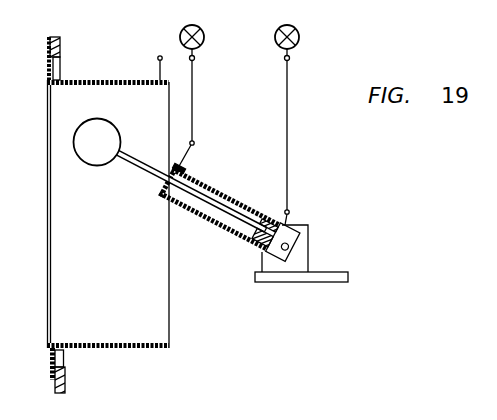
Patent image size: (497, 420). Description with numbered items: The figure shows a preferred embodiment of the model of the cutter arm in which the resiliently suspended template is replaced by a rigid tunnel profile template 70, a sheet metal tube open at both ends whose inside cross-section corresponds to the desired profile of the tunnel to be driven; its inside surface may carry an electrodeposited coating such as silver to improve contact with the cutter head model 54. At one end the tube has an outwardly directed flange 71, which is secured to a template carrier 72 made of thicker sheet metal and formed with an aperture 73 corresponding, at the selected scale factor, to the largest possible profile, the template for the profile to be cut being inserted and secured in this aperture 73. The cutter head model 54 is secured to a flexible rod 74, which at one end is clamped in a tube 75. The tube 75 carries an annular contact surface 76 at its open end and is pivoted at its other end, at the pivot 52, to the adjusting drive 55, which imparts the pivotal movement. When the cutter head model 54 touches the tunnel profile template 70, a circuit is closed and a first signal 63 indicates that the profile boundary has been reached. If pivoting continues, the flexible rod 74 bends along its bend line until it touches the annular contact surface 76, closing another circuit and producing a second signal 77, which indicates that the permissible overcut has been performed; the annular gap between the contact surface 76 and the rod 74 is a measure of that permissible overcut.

The pivot block 52 is at (303, 238).
The cutter head model 54 is at (89, 153).
The adjusting drive 55 is at (302, 263).
The first signal 63 is at (299, 37).
The tunnel profile template 70 is at (142, 65).
The outwardly directed flange 71 is at (47, 62).
The template carrier 72 is at (58, 42).
The aperture 73 is at (56, 72).
The flexible rod 74 is at (138, 162).
The tube 75 is at (242, 200).
The annular contact surface 76 is at (188, 172).
The second signal 77 is at (204, 37).